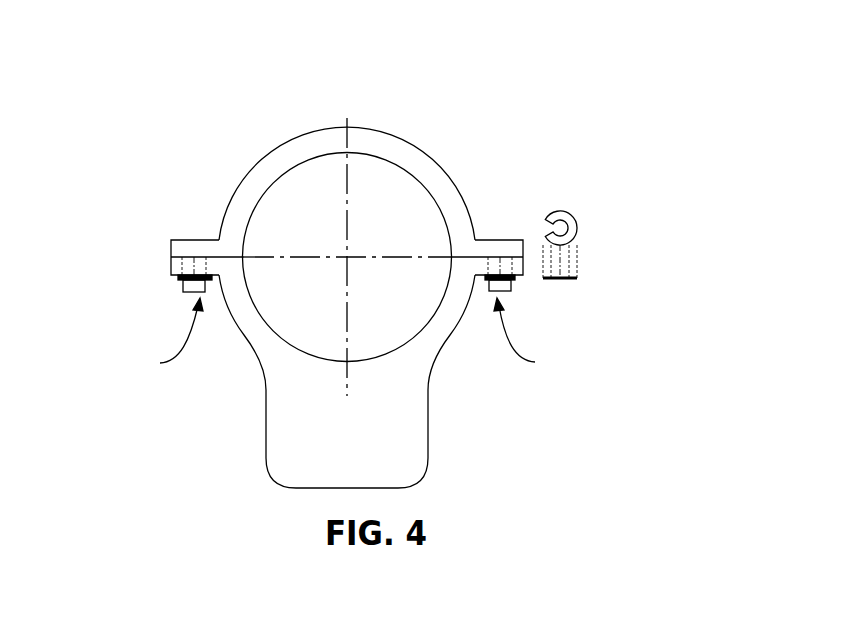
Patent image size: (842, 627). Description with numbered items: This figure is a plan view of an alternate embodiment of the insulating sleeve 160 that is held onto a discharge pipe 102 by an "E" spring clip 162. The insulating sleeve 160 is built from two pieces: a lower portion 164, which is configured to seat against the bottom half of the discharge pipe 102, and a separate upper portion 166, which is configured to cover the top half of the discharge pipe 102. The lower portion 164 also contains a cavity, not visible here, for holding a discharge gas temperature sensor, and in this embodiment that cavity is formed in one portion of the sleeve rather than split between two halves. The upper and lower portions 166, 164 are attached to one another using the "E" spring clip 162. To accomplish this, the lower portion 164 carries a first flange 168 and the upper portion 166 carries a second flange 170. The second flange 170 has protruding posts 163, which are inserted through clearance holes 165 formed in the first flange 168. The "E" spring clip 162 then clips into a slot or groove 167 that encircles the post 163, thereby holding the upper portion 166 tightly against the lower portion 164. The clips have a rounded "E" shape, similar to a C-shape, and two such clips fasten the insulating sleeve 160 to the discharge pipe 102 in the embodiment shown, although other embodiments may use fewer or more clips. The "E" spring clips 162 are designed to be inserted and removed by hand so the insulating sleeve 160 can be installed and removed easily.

The discharge pipe 102 is at (310, 158).
The insulating sleeve 160 is at (266, 433).
The E spring clip 162 is at (177, 282).
The protruding post 163 is at (185, 293).
The lower portion 164 is at (430, 438).
The clearance hole 165 is at (345, 340).
The upper portion 166 is at (407, 140).
The slot or groove 167 is at (513, 278).
The first flange 168 is at (170, 265).
The second flange 170 is at (170, 250).